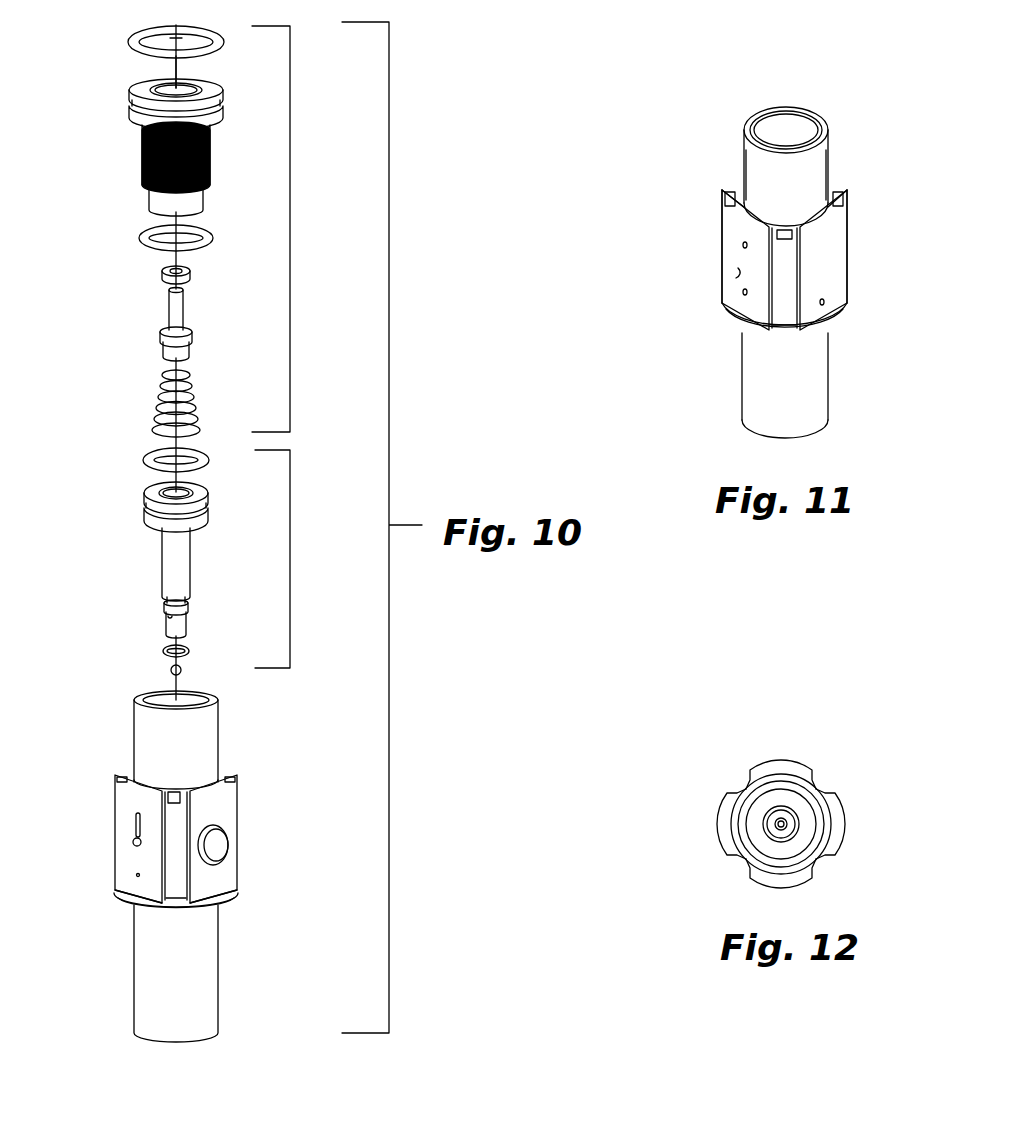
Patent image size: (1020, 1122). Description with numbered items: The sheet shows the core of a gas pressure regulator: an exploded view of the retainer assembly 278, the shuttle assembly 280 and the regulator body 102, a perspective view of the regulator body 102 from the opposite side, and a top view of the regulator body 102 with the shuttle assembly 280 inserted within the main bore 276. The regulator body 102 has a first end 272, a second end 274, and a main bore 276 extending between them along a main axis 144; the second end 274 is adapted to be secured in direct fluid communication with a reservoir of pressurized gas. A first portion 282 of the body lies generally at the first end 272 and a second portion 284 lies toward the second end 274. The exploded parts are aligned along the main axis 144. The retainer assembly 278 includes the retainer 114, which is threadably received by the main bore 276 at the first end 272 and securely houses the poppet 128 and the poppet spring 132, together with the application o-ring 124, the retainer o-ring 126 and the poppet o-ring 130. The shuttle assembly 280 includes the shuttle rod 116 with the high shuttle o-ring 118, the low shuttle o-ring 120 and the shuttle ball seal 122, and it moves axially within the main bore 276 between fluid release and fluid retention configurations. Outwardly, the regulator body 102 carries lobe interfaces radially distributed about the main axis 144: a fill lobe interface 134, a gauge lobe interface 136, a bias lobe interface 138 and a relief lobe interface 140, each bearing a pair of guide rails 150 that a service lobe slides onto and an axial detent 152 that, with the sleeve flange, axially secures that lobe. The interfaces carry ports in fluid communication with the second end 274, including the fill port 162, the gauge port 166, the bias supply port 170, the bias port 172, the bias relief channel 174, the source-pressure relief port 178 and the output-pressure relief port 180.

In FIG. 10, the regulator body 102 is at (303, 742).
In FIG. 11, the regulator body 102 is at (688, 112).
In FIG. 12, the regulator body 102 is at (722, 748).
In FIG. 10, the retainer 114 is at (108, 127).
In FIG. 10, the shuttle rod 116 is at (163, 560).
In FIG. 10, the high shuttle o-ring 118 is at (164, 651).
In FIG. 10, the low shuttle o-ring 120 is at (143, 460).
In FIG. 10, the shuttle ball seal 122 is at (170, 671).
In FIG. 10, the application o-ring 124 is at (130, 42).
In FIG. 10, the retainer o-ring 126 is at (138, 238).
In FIG. 10, the poppet 128 is at (170, 311).
In FIG. 10, the poppet o-ring 130 is at (162, 273).
In FIG. 10, the poppet spring 132 is at (150, 405).
In FIG. 10, the fill lobe interface 134 is at (225, 805).
In FIG. 11, the gauge lobe interface 136 is at (828, 250).
In FIG. 10, the bias lobe interface 138 is at (128, 803).
In FIG. 11, the relief lobe interface 140 is at (740, 270).
In FIG. 10, the main axis 144 is at (182, 70).
In FIG. 10, the guide rail 150 is at (175, 903).
In FIG. 11, the guide rail 150 is at (782, 330).
In FIG. 12, the guide rail 150 is at (832, 790).
In FIG. 10, the axial detent 152 is at (118, 895).
In FIG. 11, the axial detent 152 is at (728, 318).
In FIG. 12, the axial detent 152 is at (845, 825).
In FIG. 10, the fill port 162 is at (210, 845).
In FIG. 11, the gauge port 166 is at (824, 302).
In FIG. 10, the bias supply port 170 is at (134, 876).
In FIG. 10, the bias port 172 is at (133, 843).
In FIG. 10, the bias relief channel 174 is at (135, 825).
In FIG. 11, the source-pressure relief port 178 is at (742, 292).
In FIG. 11, the output-pressure relief port 180 is at (742, 245).
In FIG. 11, the first end 272 is at (815, 122).
In FIG. 11, the second end 274 is at (815, 432).
In FIG. 11, the main bore 276 is at (786, 136).
In FIG. 10, the retainer assembly 278 is at (290, 228).
In FIG. 10, the shuttle assembly 280 is at (290, 560).
In FIG. 11, the first portion 282 is at (815, 173).
In FIG. 11, the second portion 284 is at (812, 387).